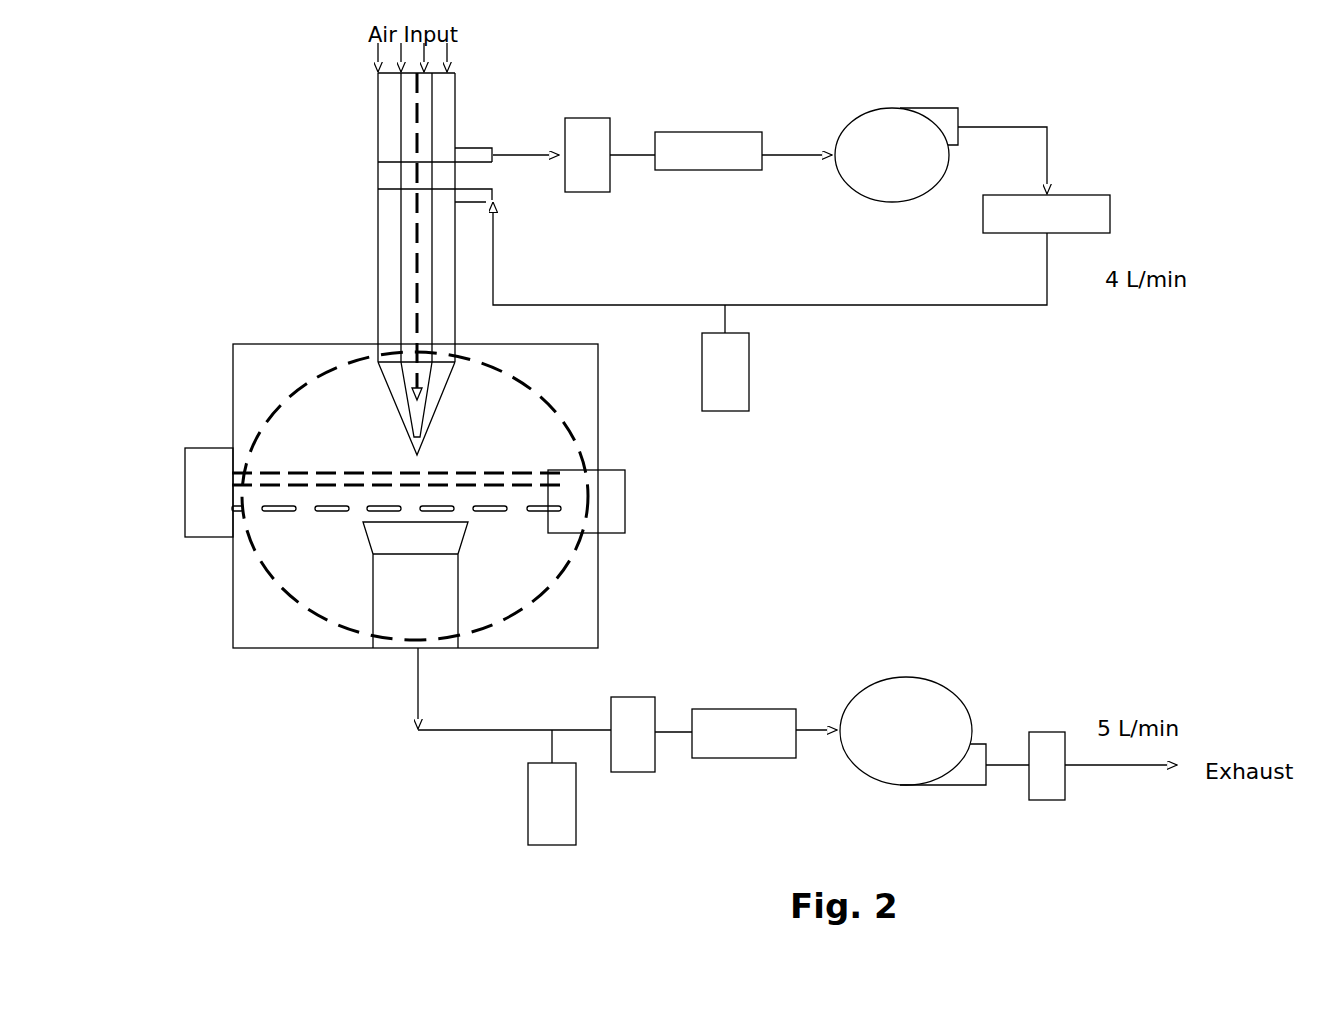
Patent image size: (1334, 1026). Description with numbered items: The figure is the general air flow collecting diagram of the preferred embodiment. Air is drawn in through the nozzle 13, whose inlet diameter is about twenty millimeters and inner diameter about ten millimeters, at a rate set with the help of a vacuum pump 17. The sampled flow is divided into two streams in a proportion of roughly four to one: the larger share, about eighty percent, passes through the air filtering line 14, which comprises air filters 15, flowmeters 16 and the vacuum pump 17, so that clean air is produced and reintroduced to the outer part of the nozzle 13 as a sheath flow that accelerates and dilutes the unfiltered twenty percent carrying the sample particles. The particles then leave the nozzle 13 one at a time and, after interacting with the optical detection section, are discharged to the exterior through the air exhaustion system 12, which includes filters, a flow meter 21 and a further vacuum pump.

The air exhaustion system 12 is at (400, 308).
The nozzle 13 is at (524, 150).
The air filtering line 14 is at (625, 178).
The air filters 15 is at (715, 128).
The flowmeters 16 is at (921, 105).
The vacuum pump 17 is at (753, 384).
The flow meter 21 is at (231, 375).